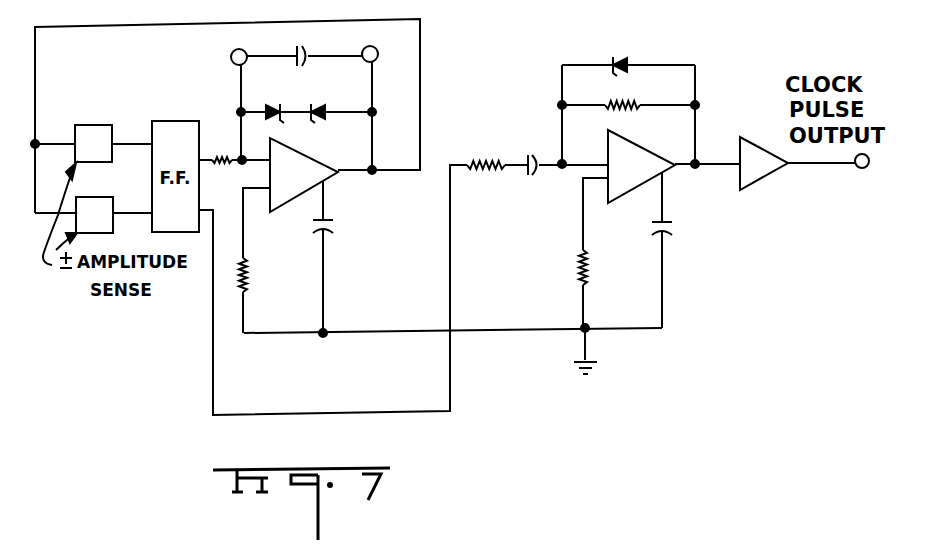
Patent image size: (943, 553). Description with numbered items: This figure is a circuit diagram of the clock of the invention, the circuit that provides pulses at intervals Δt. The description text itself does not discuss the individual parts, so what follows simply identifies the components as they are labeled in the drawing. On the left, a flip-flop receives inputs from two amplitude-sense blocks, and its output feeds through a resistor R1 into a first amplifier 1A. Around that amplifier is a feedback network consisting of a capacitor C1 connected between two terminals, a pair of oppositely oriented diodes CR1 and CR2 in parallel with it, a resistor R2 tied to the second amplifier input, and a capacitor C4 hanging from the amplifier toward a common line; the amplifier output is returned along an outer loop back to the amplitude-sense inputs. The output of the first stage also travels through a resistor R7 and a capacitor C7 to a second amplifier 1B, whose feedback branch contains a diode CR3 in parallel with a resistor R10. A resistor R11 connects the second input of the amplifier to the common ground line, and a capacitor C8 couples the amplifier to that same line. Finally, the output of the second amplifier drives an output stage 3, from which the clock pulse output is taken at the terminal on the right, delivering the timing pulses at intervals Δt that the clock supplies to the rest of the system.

The resistor R1 is at (234, 149).
The resistor R2 is at (257, 260).
The capacitor C1 is at (304, 50).
The capacitor C4 is at (331, 257).
The diode CR1 is at (270, 103).
The diode CR2 is at (336, 102).
The operational amplifier 1A is at (304, 175).
The resistor R7 is at (497, 153).
The capacitor C7 is at (563, 155).
The diode CR3 is at (628, 55).
The resistor R10 is at (628, 118).
The resistor R11 is at (601, 253).
The capacitor C8 is at (675, 250).
The operational amplifier 1B is at (641, 166).
The output buffer 3 is at (764, 163).